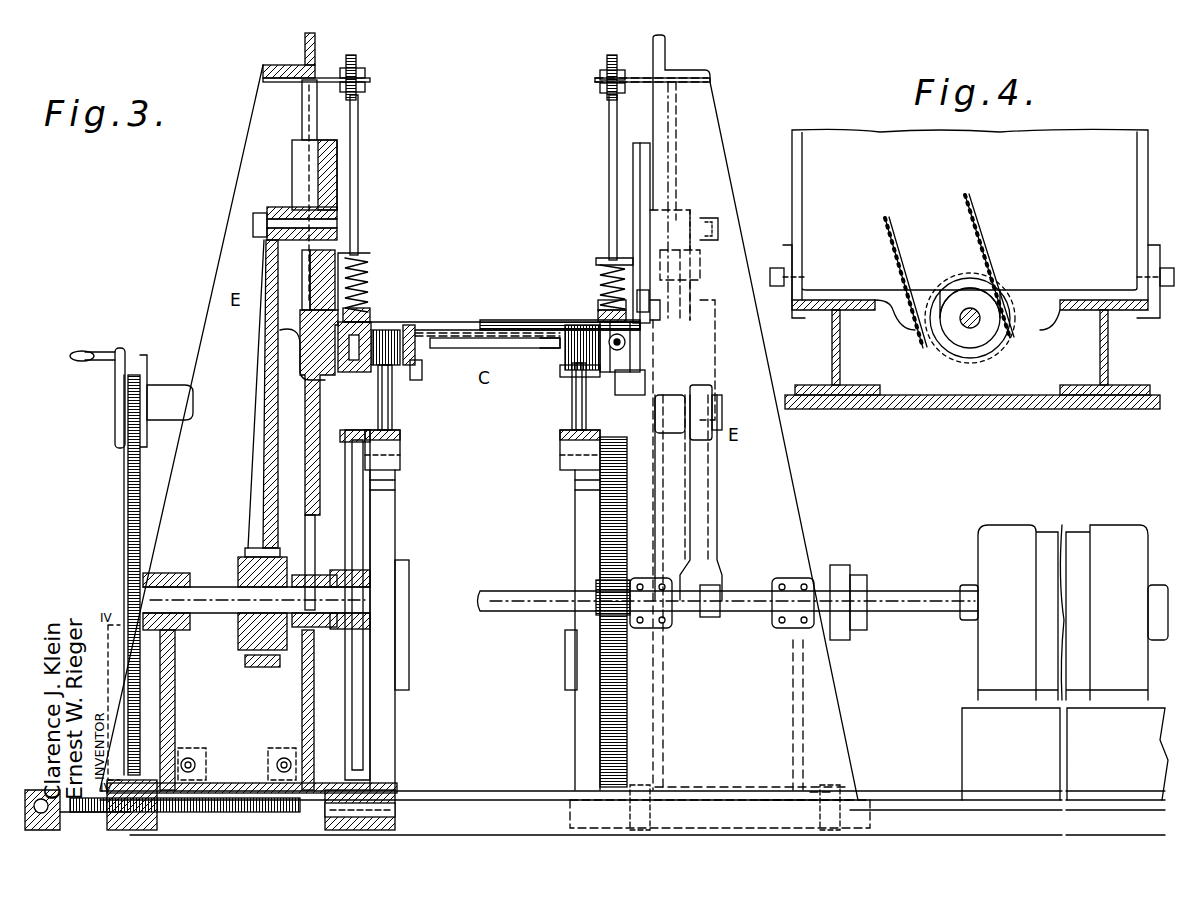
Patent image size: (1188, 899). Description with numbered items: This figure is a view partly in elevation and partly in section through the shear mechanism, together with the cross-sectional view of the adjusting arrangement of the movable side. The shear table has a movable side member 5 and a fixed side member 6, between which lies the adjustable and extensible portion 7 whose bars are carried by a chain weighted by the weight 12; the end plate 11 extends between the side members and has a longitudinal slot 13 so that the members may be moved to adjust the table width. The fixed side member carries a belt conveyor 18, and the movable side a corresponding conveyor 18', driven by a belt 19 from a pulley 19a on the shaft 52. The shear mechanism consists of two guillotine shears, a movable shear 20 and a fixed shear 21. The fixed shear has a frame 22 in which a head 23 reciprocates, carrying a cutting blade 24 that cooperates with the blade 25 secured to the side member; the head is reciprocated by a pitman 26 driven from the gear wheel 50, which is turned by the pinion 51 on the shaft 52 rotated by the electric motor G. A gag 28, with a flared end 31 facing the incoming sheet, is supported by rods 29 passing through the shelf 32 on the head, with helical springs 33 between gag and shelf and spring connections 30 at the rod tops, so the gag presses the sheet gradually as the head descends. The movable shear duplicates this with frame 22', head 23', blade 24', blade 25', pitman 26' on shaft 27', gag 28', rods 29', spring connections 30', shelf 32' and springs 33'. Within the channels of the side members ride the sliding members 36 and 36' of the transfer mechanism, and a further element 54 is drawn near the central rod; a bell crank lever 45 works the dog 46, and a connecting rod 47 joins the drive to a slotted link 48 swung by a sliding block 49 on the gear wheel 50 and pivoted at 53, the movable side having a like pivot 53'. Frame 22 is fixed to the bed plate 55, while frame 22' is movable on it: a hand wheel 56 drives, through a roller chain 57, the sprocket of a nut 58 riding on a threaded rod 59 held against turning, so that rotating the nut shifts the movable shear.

In FIG. 3, the movable side member 5 is at (380, 322).
In FIG. 3, the fixed side member 6 is at (560, 368).
In FIG. 3, the adjustable and extensible portion 7 is at (476, 323).
In FIG. 3, the end plate 11 is at (495, 355).
In FIG. 3, the weight 12 is at (420, 378).
In FIG. 3, the longitudinal slot 13 is at (530, 348).
In FIG. 3, the belt conveyor 18 is at (663, 412).
In FIG. 3, the belt conveyor 18' is at (278, 460).
In FIG. 3, the belt 19 is at (712, 462).
In FIG. 3, the pulley 19a is at (720, 590).
In FIG. 3, the guillotine shear 20 is at (262, 123).
In FIG. 3, the guillotine shear 21 is at (700, 130).
In FIG. 3, the shear frame 22 is at (755, 441).
In FIG. 3, the shear frame 22' is at (235, 411).
In FIG. 4, the shear frame 22' is at (972, 218).
In FIG. 3, the head 23 is at (608, 233).
In FIG. 3, the head 23' is at (353, 225).
In FIG. 3, the cutting blade 24 is at (688, 296).
In FIG. 3, the cutting blade 24' is at (281, 246).
In FIG. 3, the blade 25 is at (638, 346).
In FIG. 3, the blade 25' is at (295, 346).
In FIG. 3, the pitman 26 is at (723, 360).
In FIG. 3, the pitman 26' is at (249, 394).
In FIG. 3, the shaft 27' is at (256, 607).
In FIG. 3, the gag or sheet brake 28 is at (594, 310).
In FIG. 3, the gag or sheet brake 28' is at (372, 301).
In FIG. 3, the supporting rod 29 is at (591, 177).
In FIG. 3, the supporting rod 29' is at (380, 175).
In FIG. 3, the spring connection 30 is at (652, 67).
In FIG. 3, the spring connection 30' is at (342, 69).
In FIG. 3, the flared end of gag 31 is at (600, 296).
In FIG. 3, the shelf 32 is at (598, 243).
In FIG. 3, the shelf 32' is at (371, 266).
In FIG. 3, the helical spring 33 is at (595, 282).
In FIG. 3, the helical spring 33' is at (375, 283).
In FIG. 3, the sliding member 36 is at (562, 328).
In FIG. 3, the sliding member 36' is at (423, 326).
In FIG. 3, the second bell crank lever 45 is at (575, 415).
In FIG. 3, the vertically movable dog 46 is at (560, 378).
In FIG. 3, the connecting rod 47 is at (565, 434).
In FIG. 3, the slotted link 48 is at (575, 495).
In FIG. 3, the sliding block 49 is at (570, 685).
In FIG. 3, the gear wheel 50 is at (600, 543).
In FIG. 3, the pinion 51 is at (615, 615).
In FIG. 3, the shaft 52 is at (770, 616).
In FIG. 3, the pivot 53 is at (703, 808).
In FIG. 3, the pivot 53' is at (381, 810).
In FIG. 3, the rod 54 is at (503, 320).
In FIG. 3, the bed plate 55 is at (462, 800).
In FIG. 4, the bed plate 55 is at (832, 343).
In FIG. 3, the hand wheel 56 is at (125, 418).
In FIG. 3, the roller chain 57 is at (130, 512).
In FIG. 4, the roller chain 57 is at (986, 242).
In FIG. 3, the nut 58 is at (170, 750).
In FIG. 4, the nut 58 is at (935, 335).
In FIG. 3, the threaded rod 59 is at (228, 758).
In FIG. 4, the threaded rod 59 is at (980, 318).
In FIG. 3, the electric motor G is at (1045, 528).